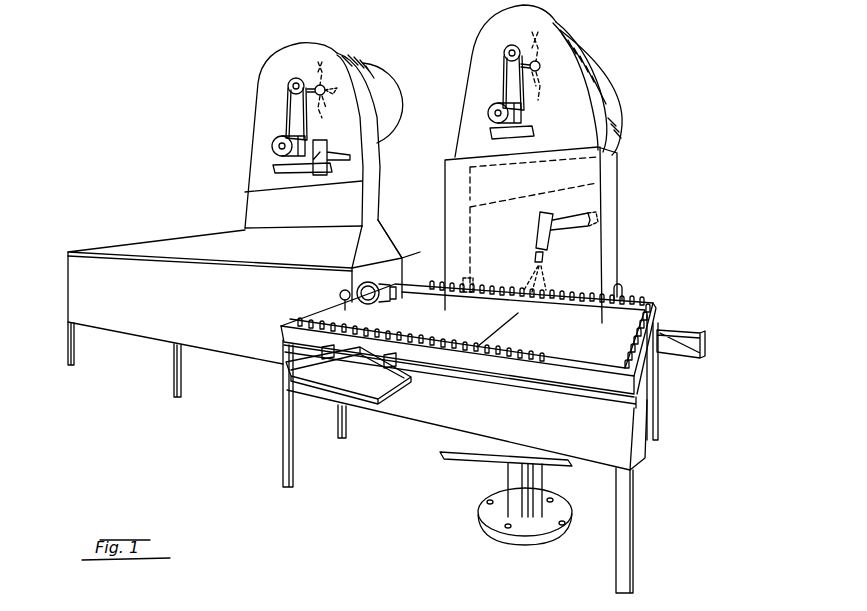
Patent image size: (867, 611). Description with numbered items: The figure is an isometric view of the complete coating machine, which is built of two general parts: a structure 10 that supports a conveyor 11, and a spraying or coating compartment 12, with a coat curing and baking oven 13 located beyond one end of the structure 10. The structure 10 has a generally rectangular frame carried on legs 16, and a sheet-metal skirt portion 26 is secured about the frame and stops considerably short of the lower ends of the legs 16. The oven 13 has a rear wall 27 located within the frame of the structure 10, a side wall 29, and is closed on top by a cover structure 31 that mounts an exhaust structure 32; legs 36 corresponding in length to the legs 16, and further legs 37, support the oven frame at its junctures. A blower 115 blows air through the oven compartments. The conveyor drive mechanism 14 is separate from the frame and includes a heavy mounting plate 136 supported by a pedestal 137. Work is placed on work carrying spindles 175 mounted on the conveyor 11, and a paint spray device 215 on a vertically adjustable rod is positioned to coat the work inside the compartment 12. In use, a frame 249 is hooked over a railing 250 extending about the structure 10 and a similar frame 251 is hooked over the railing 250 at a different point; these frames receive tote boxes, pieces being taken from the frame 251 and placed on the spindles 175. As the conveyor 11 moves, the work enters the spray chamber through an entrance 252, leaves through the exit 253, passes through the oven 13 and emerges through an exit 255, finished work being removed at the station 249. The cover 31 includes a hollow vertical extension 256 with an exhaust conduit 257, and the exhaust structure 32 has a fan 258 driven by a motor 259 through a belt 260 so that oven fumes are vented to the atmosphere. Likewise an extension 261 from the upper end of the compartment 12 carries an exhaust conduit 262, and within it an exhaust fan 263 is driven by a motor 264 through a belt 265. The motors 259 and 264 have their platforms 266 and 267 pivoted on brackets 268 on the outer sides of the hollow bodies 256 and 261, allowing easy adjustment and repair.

The structure 10 is at (394, 442).
The conveyor 11 is at (560, 350).
The spraying or coating compartment 12 is at (608, 238).
The oven or curing chamber 13 is at (103, 240).
The conveyor drive mechanism 14 is at (486, 468).
The legs 16 is at (284, 466).
The skirt portion 26 is at (420, 422).
The rear wall 27 is at (403, 278).
The side wall 29 is at (143, 328).
The cover structure 31 is at (186, 240).
The exhaust structure 32 is at (250, 81).
The legs 36 is at (339, 430).
The legs 37 is at (67, 350).
The blower 115 is at (380, 302).
The mounting plate 136 is at (447, 455).
The pedestal 137 is at (542, 485).
The work carrying spindles 175 is at (470, 341).
The paint spray device 215 is at (538, 231).
The frame 249 is at (284, 387).
The railing 250 is at (517, 396).
The frame 251 is at (704, 348).
The entrance 252 is at (622, 293).
The exit 253 is at (478, 282).
The exit 255 is at (340, 296).
The hollow vertical extension 256 is at (254, 167).
The exhaust conduit 257 is at (381, 90).
The fan 258 is at (327, 58).
The motor 259 is at (272, 146).
The belt 260 is at (286, 106).
The extension 261 is at (466, 136).
The exhaust conduit 262 is at (612, 120).
The exhaust fan 263 is at (545, 55).
The motor 264 is at (490, 114).
The belt 265 is at (504, 82).
The base or platform 266 is at (298, 182).
The base or platform 267 is at (520, 137).
The brackets 268 is at (352, 168).